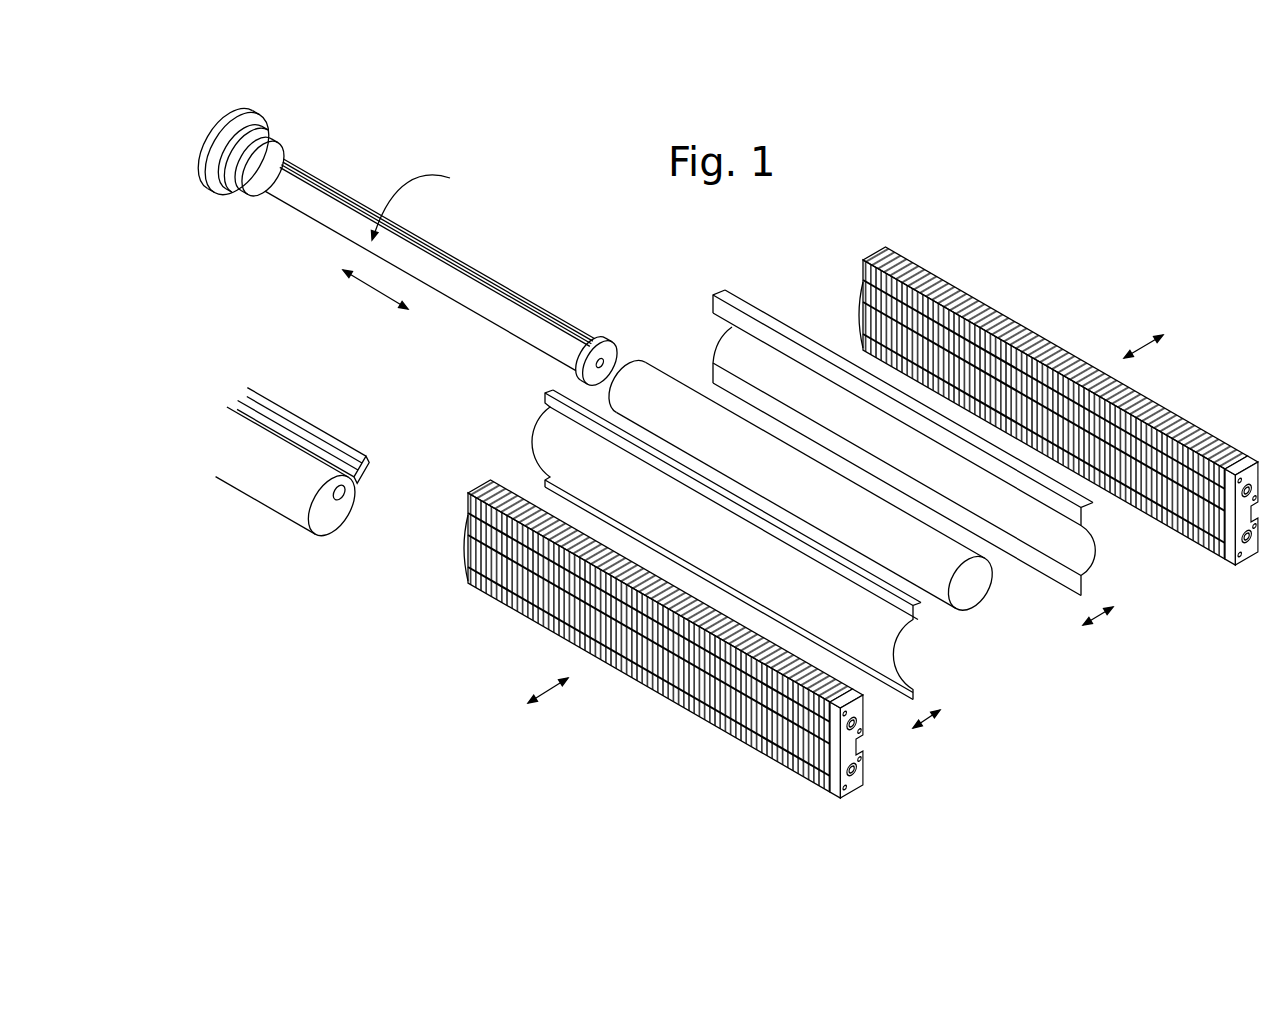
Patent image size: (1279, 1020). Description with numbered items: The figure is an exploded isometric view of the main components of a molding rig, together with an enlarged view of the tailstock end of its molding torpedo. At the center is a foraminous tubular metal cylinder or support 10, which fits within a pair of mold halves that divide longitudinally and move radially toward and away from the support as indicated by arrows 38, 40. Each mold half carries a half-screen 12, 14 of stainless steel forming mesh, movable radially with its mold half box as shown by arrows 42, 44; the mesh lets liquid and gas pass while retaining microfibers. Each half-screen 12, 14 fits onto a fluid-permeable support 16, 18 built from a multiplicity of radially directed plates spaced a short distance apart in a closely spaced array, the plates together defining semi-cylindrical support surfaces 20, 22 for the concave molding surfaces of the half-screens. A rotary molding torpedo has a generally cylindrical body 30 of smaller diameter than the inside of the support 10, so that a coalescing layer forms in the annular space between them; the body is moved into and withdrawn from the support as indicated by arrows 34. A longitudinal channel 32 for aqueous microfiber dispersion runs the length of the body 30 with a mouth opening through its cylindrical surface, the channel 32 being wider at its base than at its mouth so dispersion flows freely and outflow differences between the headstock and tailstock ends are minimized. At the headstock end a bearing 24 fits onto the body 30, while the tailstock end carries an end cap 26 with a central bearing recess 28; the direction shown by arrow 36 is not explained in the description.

In FIG. 1, the foraminous tubular metal support 10 is at (983, 603).
In FIG. 1, the half-screen 12 is at (887, 690).
In FIG. 1, the half-screen 14 is at (1100, 550).
In FIG. 1, the fluid-permeable support 16 is at (466, 565).
In FIG. 1, the fluid-permeable support 18 is at (982, 292).
In FIG. 1, the semi-cylindrical support surface 20 is at (847, 740).
In FIG. 1, the semi-cylindrical support surface 22 is at (873, 310).
In FIG. 1, the bearing 24 is at (262, 140).
In FIG. 1, the end cap 26 is at (580, 353).
In FIG. 1, the central bearing recess 28 is at (603, 360).
In FIG. 1, the cylindrical body 30 is at (472, 300).
In FIG. 1a, the cylindrical body 30 is at (270, 478).
In FIG. 1, the longitudinal channel 32 is at (500, 283).
In FIG. 1a, the longitudinal channel 32 is at (287, 425).
In FIG. 1, the arrows 34 is at (375, 290).
In FIG. 1, the rotation arrow 36 is at (430, 200).
In FIG. 1, the arrow 38 is at (1143, 347).
In FIG. 1, the arrow 40 is at (548, 690).
In FIG. 1, the arrow 42 is at (1098, 617).
In FIG. 1, the arrow 44 is at (927, 722).